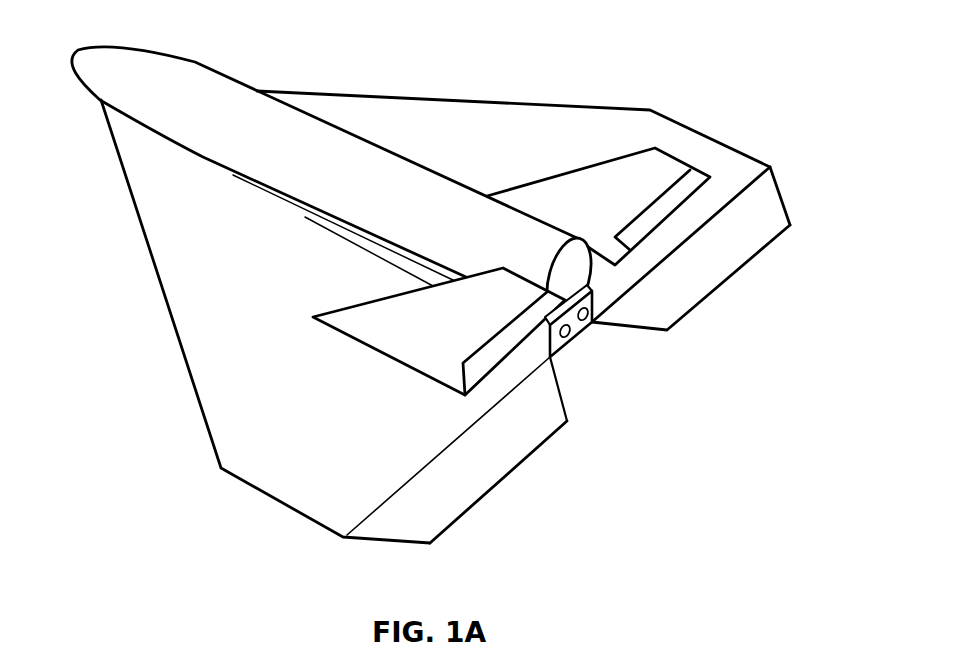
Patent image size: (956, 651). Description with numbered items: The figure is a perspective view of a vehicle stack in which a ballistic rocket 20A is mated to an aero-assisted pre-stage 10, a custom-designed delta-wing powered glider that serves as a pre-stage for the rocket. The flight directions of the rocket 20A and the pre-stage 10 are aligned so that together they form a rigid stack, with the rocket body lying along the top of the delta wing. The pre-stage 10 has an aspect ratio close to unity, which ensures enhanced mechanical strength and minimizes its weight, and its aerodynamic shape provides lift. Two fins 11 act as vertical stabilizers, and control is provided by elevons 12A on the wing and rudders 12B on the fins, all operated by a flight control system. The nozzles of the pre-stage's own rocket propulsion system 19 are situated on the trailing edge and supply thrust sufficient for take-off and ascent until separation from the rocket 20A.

The aero-assisted pre-stage 10 is at (490, 100).
The vertical stabilizer 11 is at (588, 165).
The elevon 12A is at (758, 257).
The rudder 12B is at (670, 215).
The rocket propulsion system 19 is at (570, 337).
The ballistic rocket 20A is at (203, 158).